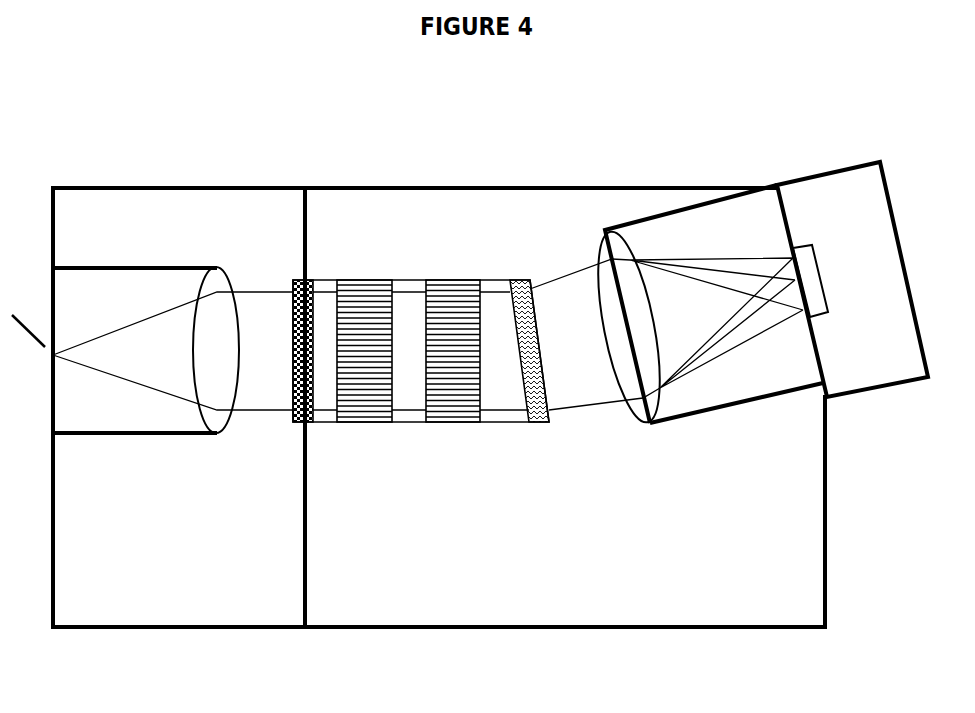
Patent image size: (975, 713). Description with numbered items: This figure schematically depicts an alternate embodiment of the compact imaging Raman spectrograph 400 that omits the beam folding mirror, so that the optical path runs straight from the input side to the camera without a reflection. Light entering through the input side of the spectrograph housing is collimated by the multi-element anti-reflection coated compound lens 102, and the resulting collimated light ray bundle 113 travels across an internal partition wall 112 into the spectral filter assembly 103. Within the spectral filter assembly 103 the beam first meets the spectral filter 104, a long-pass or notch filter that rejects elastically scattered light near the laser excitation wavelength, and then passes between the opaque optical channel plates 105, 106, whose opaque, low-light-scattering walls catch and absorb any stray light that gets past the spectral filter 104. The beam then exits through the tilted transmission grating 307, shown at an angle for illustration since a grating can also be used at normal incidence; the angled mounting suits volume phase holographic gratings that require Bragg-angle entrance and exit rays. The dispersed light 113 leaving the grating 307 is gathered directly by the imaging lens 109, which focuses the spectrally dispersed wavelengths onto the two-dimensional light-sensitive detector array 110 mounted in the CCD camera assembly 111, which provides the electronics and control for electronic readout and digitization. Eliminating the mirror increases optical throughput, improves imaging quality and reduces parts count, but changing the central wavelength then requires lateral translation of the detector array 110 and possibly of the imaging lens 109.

The spectrometer housing 400 is at (170, 628).
The partition wall 112 is at (307, 510).
The collimated light ray bundle 113 is at (257, 290).
The compound lens 102 is at (213, 433).
The spectral filter assembly 103 is at (399, 366).
The spectral filter 104 is at (292, 422).
The opaque optical channel plate 105 is at (362, 422).
The opaque optical channel plate 106 is at (452, 422).
The tilted transmission grating 307 is at (537, 423).
The imaging lens 109 is at (650, 420).
The detector array 110 is at (830, 312).
The CCD camera assembly 111 is at (852, 279).